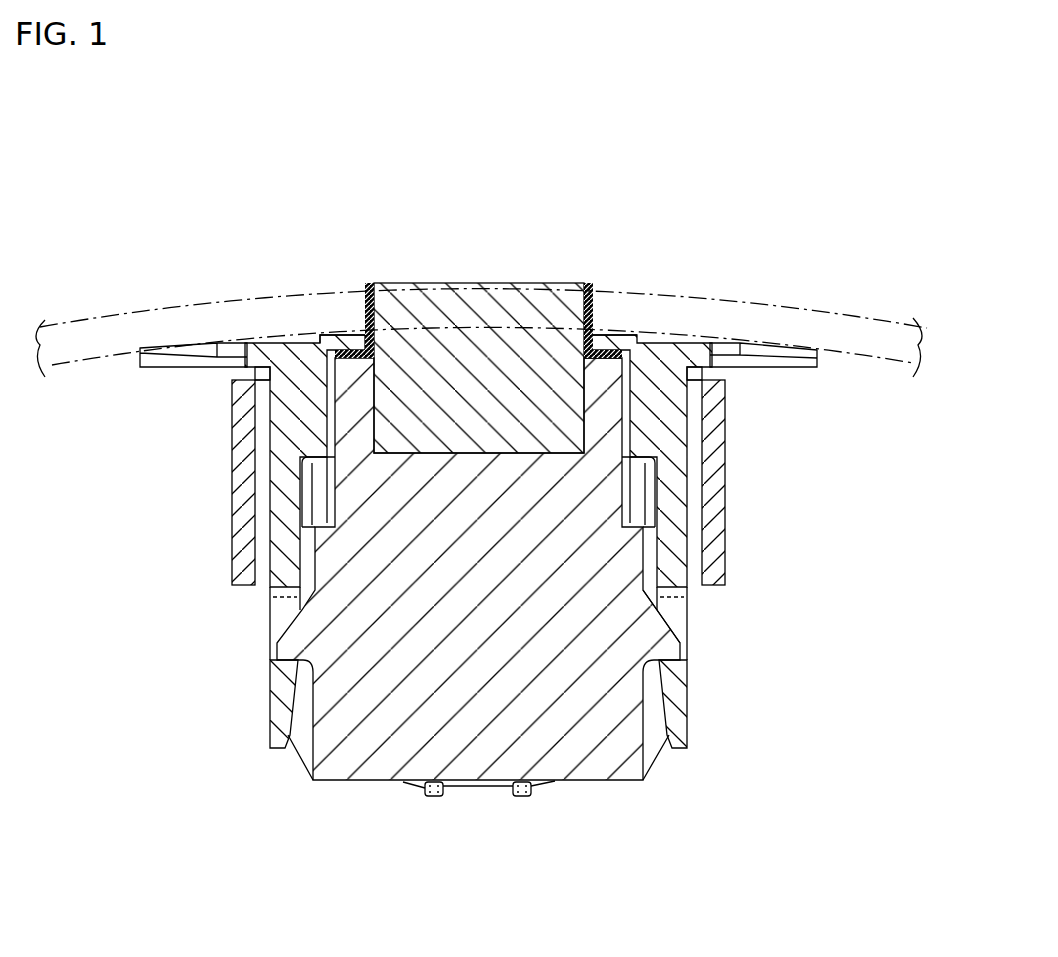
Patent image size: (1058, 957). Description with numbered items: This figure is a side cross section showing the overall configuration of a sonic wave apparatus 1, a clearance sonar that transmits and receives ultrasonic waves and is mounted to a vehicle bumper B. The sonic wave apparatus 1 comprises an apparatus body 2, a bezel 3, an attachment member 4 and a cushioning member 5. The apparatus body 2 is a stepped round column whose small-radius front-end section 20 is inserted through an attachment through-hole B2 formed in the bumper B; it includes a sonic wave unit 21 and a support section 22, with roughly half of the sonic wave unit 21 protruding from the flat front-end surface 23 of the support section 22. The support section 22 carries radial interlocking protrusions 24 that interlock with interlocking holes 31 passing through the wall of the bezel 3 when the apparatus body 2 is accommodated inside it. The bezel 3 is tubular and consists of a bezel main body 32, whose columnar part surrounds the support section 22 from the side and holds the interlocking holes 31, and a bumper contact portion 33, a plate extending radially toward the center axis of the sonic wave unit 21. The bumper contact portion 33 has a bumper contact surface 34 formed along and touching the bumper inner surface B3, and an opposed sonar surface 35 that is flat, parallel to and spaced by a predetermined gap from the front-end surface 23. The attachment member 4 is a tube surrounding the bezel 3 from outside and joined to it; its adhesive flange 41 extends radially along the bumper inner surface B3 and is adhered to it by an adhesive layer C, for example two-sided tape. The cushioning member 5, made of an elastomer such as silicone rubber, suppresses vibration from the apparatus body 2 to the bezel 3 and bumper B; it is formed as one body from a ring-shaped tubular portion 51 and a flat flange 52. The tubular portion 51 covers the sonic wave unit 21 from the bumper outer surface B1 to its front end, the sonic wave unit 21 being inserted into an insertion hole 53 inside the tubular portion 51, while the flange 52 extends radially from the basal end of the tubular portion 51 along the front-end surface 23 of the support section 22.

The sonic wave apparatus 1 is at (780, 862).
The apparatus body 2 is at (530, 531).
The bezel 3 is at (483, 524).
The attachment member 4 is at (438, 464).
The cushioning member 5 is at (549, 263).
The front-end section 20 is at (486, 322).
The sonic wave unit 21 is at (474, 283).
The support section 22 is at (378, 783).
The front-end surface 23 is at (612, 348).
The interlocking protrusions 24 is at (670, 653).
The interlocking hole 31 is at (680, 615).
The bezel main body 32 is at (678, 527).
The bumper contact portion 33 is at (333, 340).
The bumper contact surface 34 is at (352, 335).
The opposed sonar surface 35 is at (340, 384).
The adhesive flange 41 is at (783, 358).
The tubular portion 51 is at (591, 340).
The flange 52 is at (645, 340).
The insertion hole 53 is at (374, 283).
The bumper B is at (486, 322).
The bumper outer surface B1 is at (800, 300).
The attachment through-hole B2 is at (598, 296).
The bumper inner surface B3 is at (845, 364).
The adhesive layer C is at (130, 355).